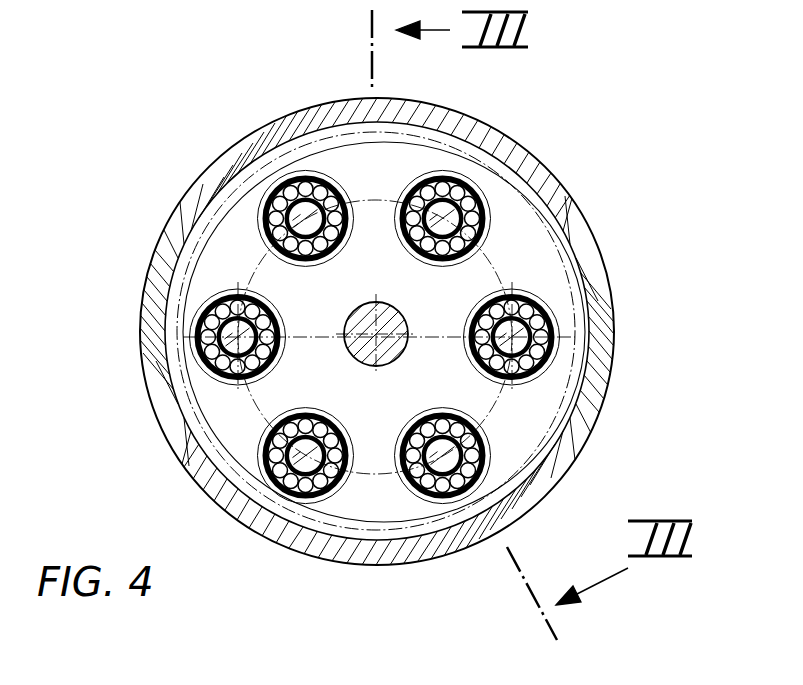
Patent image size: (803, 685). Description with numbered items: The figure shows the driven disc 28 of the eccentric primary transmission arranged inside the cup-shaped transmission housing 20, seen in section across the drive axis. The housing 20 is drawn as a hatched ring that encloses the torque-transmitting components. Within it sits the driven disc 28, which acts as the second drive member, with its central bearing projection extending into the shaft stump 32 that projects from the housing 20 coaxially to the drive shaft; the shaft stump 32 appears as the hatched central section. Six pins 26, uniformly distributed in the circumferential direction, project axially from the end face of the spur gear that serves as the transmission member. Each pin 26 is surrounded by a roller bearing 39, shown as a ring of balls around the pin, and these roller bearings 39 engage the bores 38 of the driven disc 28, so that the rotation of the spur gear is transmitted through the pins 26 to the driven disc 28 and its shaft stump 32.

The housing 20 is at (590, 242).
The pins 26 is at (262, 476).
The driven disc 28 is at (436, 301).
The shaft stump 32 is at (367, 320).
The bores 38 is at (428, 170).
The roller bearings 39 is at (266, 363).